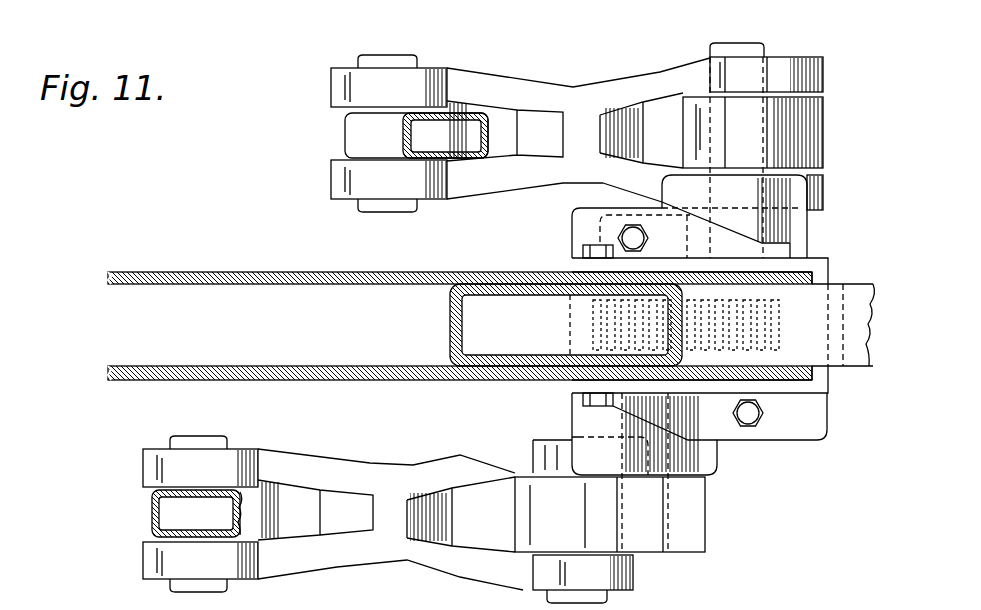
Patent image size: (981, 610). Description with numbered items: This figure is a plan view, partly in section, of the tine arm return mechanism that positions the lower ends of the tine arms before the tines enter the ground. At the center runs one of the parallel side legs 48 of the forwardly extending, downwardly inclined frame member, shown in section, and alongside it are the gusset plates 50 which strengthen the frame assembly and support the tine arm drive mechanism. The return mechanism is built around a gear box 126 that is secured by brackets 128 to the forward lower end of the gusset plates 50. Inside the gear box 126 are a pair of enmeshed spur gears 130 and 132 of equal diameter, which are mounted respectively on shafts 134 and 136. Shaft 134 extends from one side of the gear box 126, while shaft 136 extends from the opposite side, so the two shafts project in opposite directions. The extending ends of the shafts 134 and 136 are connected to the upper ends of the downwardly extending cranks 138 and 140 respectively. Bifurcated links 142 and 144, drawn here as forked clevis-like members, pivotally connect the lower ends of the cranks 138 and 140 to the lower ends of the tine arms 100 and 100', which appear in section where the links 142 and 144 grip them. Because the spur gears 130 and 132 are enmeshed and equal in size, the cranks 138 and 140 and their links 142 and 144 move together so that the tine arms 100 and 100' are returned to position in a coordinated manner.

The parallel side legs 48 is at (848, 284).
The gusset plates 50 is at (288, 366).
The tine arm 100 is at (169, 514).
The tine arm 100' is at (375, 133).
The gear box 126 is at (840, 350).
The brackets 128 is at (578, 228).
The spur gear 130 is at (755, 328).
The spur gear 132 is at (596, 324).
The shaft 134 is at (754, 48).
The shaft 136 is at (650, 556).
The crank 138 is at (807, 137).
The crank 140 is at (700, 521).
The bifurcated link 142 is at (573, 90).
The bifurcated link 144 is at (402, 562).